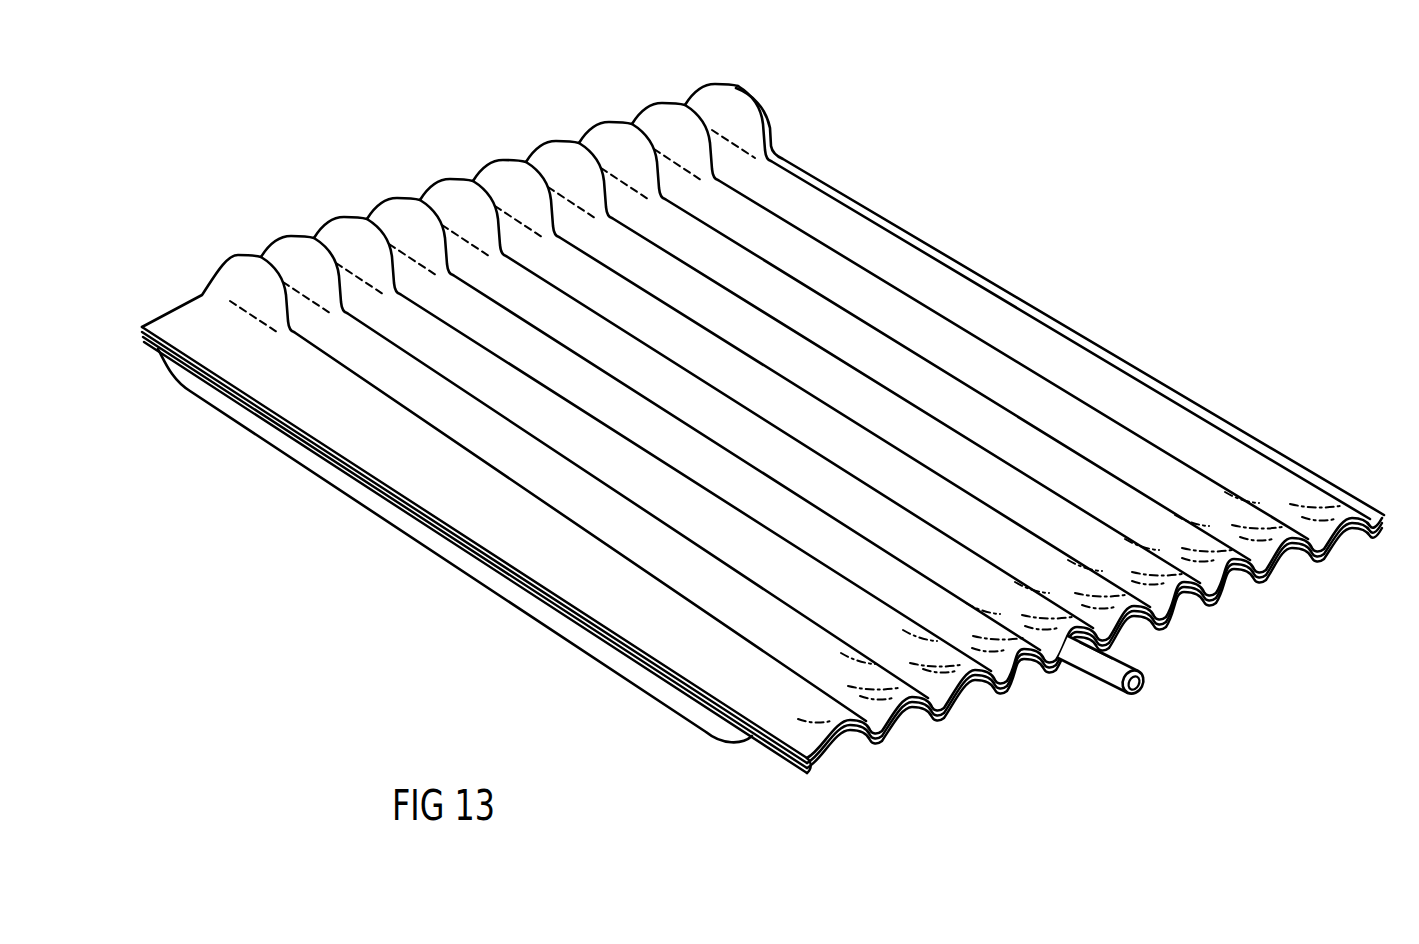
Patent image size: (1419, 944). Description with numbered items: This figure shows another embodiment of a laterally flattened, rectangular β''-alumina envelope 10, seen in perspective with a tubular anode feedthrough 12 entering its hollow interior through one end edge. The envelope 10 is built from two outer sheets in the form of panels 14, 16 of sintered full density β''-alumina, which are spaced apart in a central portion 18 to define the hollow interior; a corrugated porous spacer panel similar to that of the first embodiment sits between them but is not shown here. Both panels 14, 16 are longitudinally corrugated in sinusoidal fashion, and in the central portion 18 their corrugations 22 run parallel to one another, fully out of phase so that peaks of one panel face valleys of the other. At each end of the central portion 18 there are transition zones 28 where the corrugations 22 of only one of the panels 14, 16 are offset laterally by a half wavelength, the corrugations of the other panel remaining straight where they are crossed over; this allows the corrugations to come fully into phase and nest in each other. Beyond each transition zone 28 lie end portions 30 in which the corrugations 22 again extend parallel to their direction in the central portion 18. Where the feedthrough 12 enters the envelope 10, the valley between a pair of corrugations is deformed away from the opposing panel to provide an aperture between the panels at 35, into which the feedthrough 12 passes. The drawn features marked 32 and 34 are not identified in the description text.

The envelope 10 is at (1110, 182).
The tubular anode feedthrough 12 is at (1147, 648).
The panel 14 is at (1315, 528).
The panel 16 is at (1342, 540).
The central portion 18 is at (406, 548).
The corrugations 22 is at (1002, 456).
The transition zones 28 is at (787, 137).
The end portions 30 is at (771, 101).
The flat edge strip 32 is at (1040, 288).
The corrugation crest 34 is at (293, 232).
The aperture 35 is at (1062, 660).